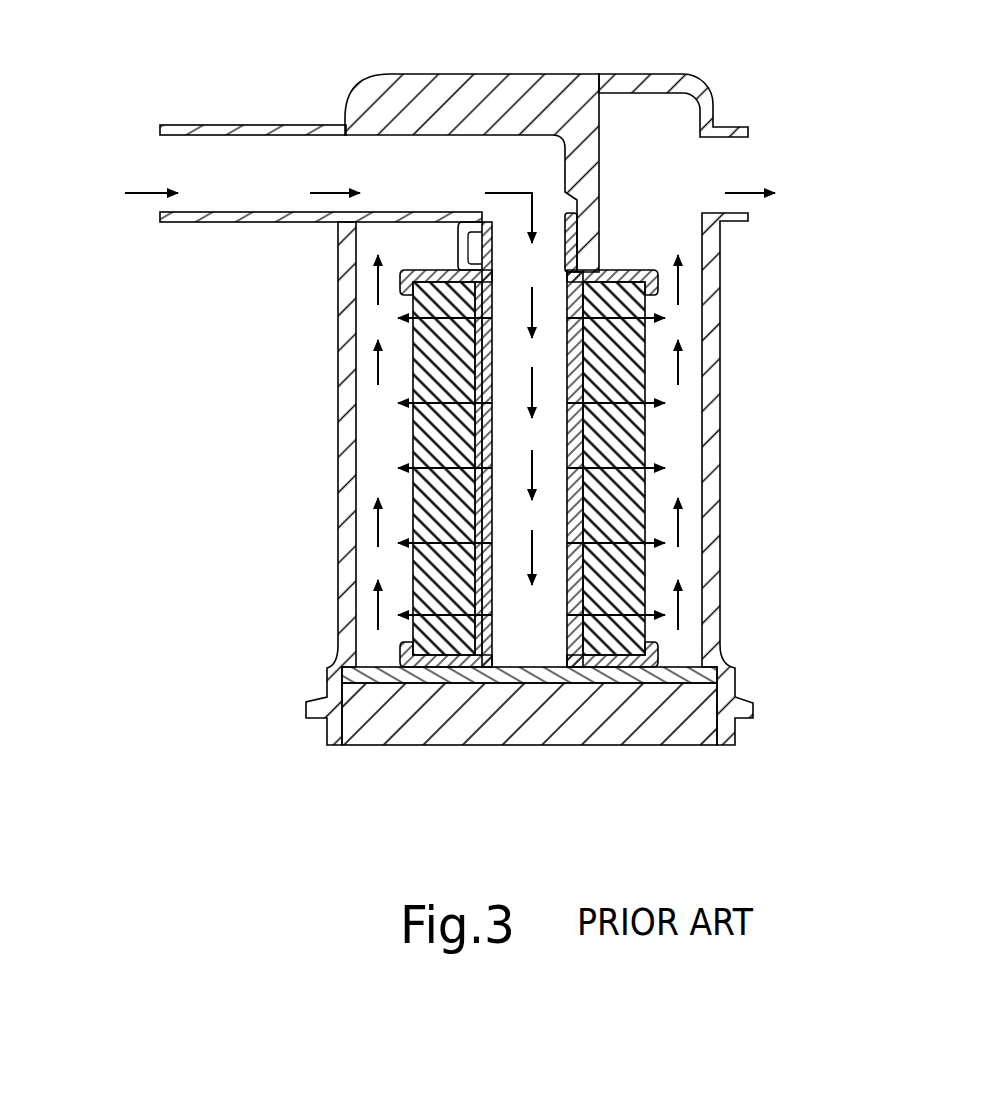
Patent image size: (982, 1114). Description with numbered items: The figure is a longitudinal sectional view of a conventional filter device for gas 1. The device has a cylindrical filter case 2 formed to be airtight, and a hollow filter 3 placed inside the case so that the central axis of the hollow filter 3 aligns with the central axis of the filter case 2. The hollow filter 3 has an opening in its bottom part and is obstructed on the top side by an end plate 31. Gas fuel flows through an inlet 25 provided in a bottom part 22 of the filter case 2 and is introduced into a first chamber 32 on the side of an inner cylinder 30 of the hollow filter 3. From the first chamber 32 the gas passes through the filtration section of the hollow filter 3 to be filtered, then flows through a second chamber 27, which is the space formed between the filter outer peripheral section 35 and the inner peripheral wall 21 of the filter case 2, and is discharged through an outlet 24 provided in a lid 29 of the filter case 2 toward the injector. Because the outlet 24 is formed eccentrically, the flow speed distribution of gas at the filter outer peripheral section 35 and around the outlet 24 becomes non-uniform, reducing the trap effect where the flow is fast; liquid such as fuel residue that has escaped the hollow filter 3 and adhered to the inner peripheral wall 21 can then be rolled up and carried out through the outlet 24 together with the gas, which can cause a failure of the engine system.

The filter device for gas 1 is at (840, 291).
The filter case 2 is at (327, 322).
The hollow filter 3 is at (640, 448).
The inner peripheral wall 21 is at (688, 638).
The bottom part 22 is at (433, 745).
The outlet 24 is at (742, 153).
The inlet 25 is at (170, 147).
The second chamber 27 is at (370, 472).
The lid 29 is at (383, 75).
The inner cylinder 30 is at (548, 583).
The end plate 31 is at (612, 268).
The first chamber 32 is at (512, 265).
The filter outer peripheral section 35 is at (415, 587).